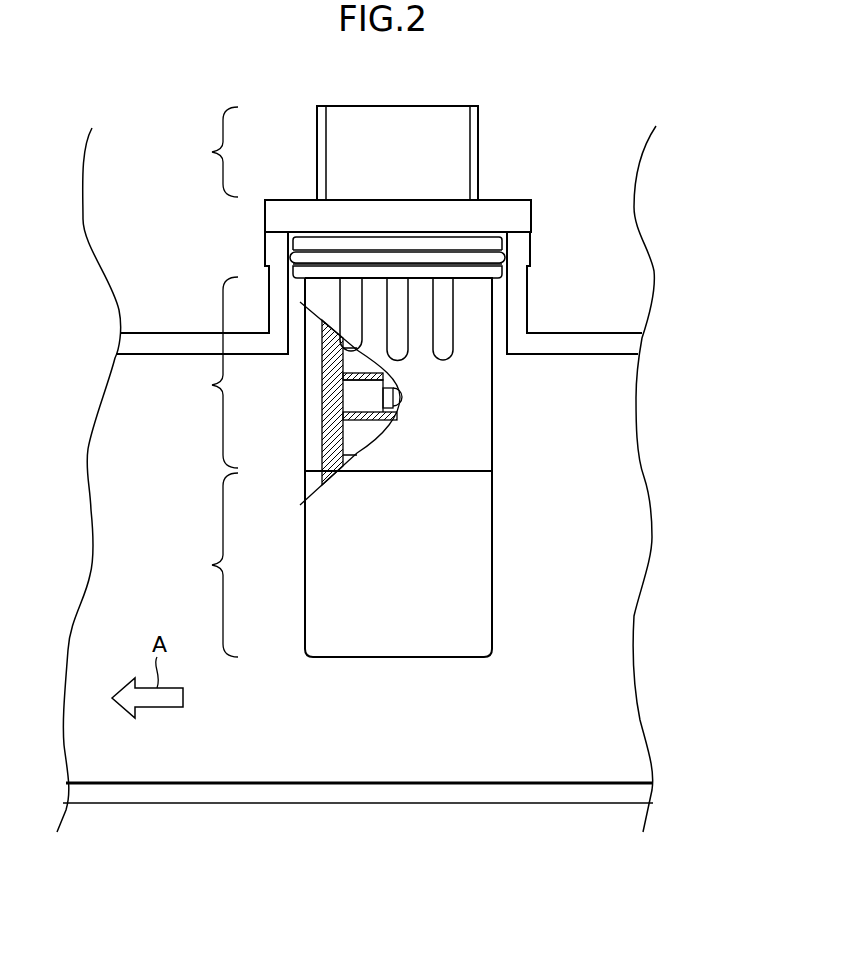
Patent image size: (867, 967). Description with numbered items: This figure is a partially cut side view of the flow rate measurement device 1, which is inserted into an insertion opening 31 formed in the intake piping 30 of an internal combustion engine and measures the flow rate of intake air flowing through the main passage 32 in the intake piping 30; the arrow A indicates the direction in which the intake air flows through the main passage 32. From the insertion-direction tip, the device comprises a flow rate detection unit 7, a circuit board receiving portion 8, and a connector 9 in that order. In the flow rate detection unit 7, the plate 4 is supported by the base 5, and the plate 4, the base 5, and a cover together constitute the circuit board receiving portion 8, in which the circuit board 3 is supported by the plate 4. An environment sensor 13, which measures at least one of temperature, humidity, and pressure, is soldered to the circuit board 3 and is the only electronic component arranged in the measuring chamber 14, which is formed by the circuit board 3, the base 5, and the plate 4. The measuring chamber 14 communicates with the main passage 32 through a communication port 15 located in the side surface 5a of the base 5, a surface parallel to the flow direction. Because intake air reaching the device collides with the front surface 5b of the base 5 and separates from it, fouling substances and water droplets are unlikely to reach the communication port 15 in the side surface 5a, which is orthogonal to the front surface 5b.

The flow rate measurement device 1 is at (478, 132).
The circuit board 3 is at (357, 442).
The plate 4 is at (408, 647).
The base 5 is at (492, 430).
The side surface of the base 5a is at (477, 455).
The front surface of the base 5b is at (493, 468).
The flow rate detection unit 7 is at (214, 565).
The circuit board receiving portion 8 is at (213, 372).
The connector 9 is at (215, 152).
The environment sensor 13 is at (336, 390).
The measuring chamber 14 is at (355, 405).
The communication port 15 is at (403, 395).
The intake piping 30 is at (465, 803).
The insertion opening 31 is at (500, 300).
The main passage 32 is at (253, 753).